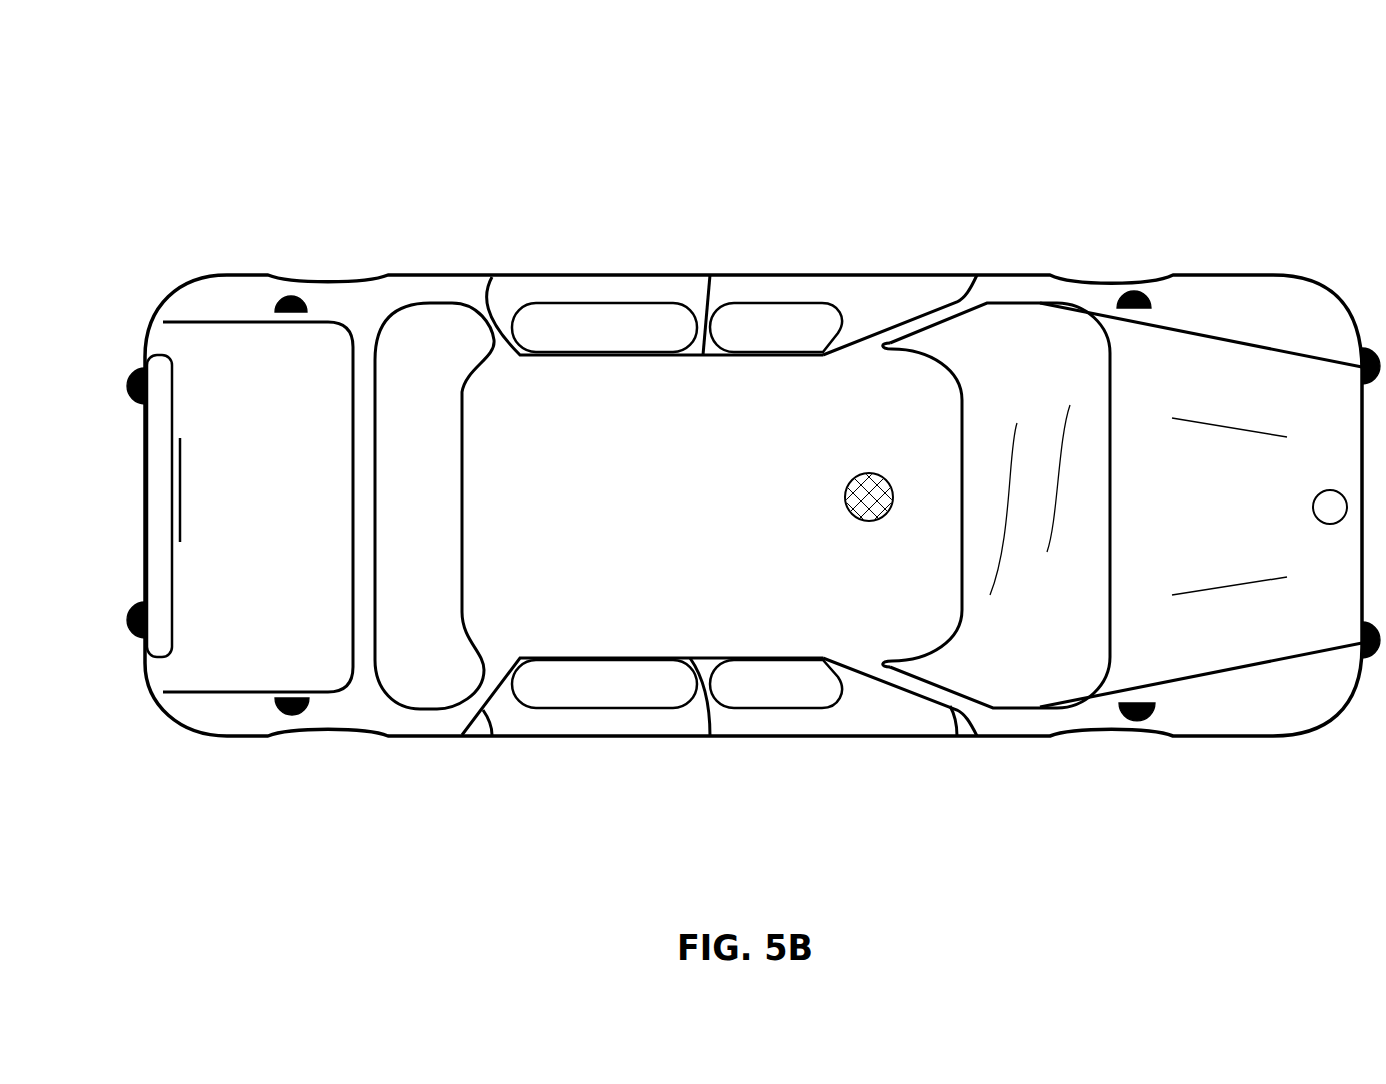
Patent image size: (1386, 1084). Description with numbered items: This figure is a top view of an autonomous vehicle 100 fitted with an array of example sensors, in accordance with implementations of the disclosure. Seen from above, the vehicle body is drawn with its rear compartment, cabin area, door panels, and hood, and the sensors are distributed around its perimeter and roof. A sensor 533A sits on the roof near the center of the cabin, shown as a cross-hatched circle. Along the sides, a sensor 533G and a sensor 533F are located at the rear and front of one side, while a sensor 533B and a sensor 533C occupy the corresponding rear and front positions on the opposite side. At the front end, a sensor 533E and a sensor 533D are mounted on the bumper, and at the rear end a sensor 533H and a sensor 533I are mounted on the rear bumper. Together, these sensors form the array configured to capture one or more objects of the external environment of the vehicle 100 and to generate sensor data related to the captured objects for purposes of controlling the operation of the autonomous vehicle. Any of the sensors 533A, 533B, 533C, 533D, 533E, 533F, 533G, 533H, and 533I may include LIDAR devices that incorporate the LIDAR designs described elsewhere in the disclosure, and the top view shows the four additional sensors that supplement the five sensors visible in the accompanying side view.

The vehicle 100 is at (1236, 109).
The sensor 533A is at (868, 474).
The sensor 533B is at (310, 702).
The sensor 533C is at (1156, 702).
The sensor 533D is at (1360, 638).
The sensor 533E is at (1358, 370).
The sensor 533F is at (1152, 306).
The sensor 533G is at (307, 310).
The sensor 533H is at (145, 392).
The sensor 533I is at (145, 623).